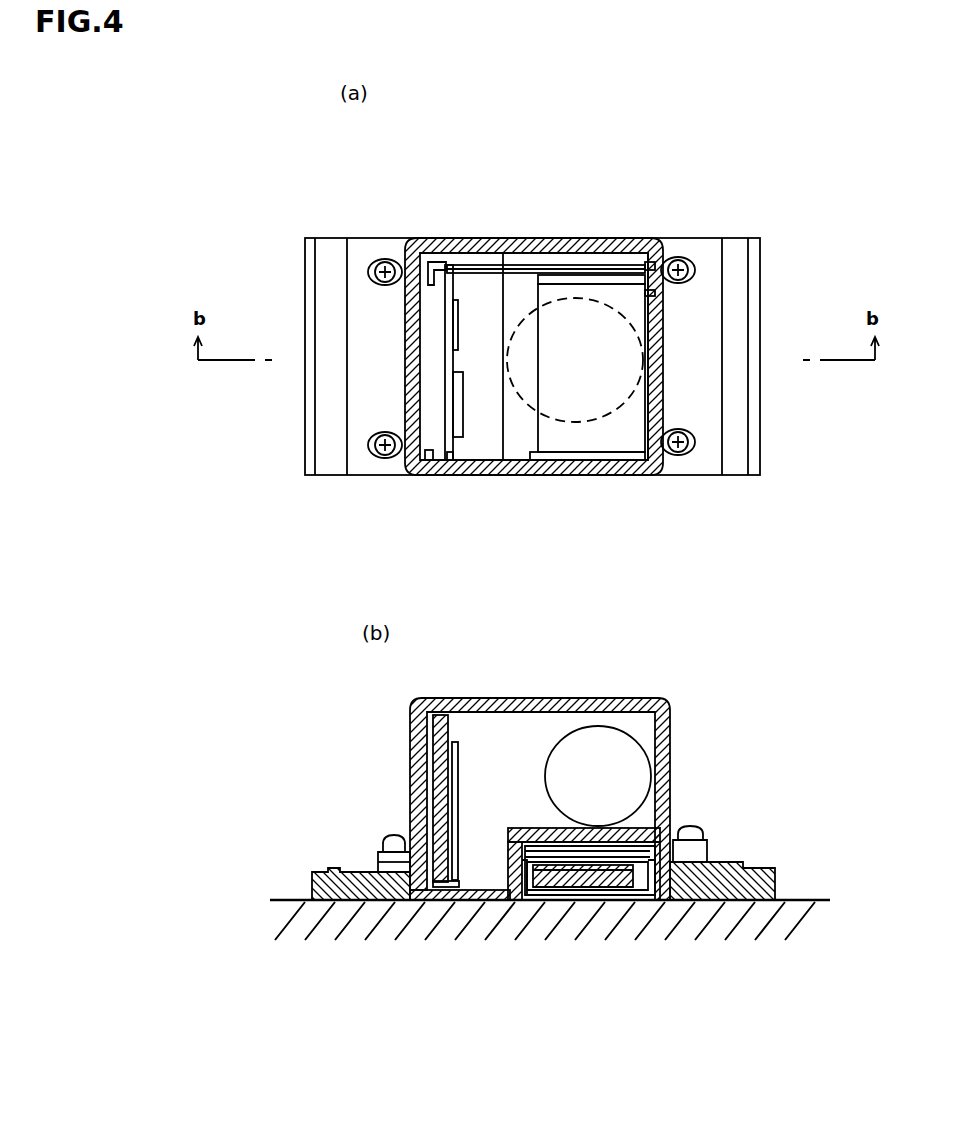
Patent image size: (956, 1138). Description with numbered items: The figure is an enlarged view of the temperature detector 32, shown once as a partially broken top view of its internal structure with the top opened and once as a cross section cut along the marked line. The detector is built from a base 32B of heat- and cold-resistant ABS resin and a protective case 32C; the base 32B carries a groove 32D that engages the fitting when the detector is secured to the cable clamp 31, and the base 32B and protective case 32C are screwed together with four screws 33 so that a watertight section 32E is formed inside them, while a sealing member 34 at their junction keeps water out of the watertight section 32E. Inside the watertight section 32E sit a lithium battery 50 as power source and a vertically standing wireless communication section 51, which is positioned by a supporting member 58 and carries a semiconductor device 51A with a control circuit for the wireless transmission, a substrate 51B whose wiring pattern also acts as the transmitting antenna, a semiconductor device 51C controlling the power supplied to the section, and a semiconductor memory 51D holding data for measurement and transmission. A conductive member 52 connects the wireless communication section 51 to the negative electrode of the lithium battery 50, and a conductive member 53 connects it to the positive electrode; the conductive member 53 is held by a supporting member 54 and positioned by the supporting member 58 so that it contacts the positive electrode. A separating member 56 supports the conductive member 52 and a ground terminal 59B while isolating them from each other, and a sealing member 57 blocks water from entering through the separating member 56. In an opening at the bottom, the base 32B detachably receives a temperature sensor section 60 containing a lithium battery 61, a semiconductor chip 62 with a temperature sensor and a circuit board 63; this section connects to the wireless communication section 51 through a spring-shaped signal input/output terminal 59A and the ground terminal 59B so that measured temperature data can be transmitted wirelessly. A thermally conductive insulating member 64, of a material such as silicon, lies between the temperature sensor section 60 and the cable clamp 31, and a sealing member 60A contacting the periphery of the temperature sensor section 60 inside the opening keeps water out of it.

The cable clamp 31 is at (798, 900).
The temperature detector 32 is at (660, 238).
The base 32B is at (394, 238).
The protective case 32C is at (535, 475).
The groove 32D is at (318, 450).
The watertight section 32E is at (512, 238).
The screw 33 is at (362, 240).
The sealing member 34 is at (375, 858).
The lithium battery 50 is at (660, 400).
The wireless communication section 51 is at (445, 393).
The semiconductor device 51A is at (472, 440).
The substrate 51B is at (445, 325).
The semiconductor device 51C is at (477, 238).
The semiconductor memory 51D is at (455, 888).
The conductive member 52 is at (636, 460).
The conductive member 53 is at (549, 265).
The supporting member 54 is at (523, 830).
The separating member 56 is at (510, 850).
The sealing member 57 is at (515, 846).
The supporting member 58 is at (438, 238).
The signal input/output terminal 59A is at (612, 885).
The ground terminal 59B is at (480, 888).
The temperature sensor section 60 is at (612, 462).
The sealing member 60A is at (495, 888).
The lithium battery 61 is at (583, 885).
The semiconductor chip 62 is at (560, 885).
The circuit board 63 is at (540, 888).
The insulating member 64 is at (642, 885).